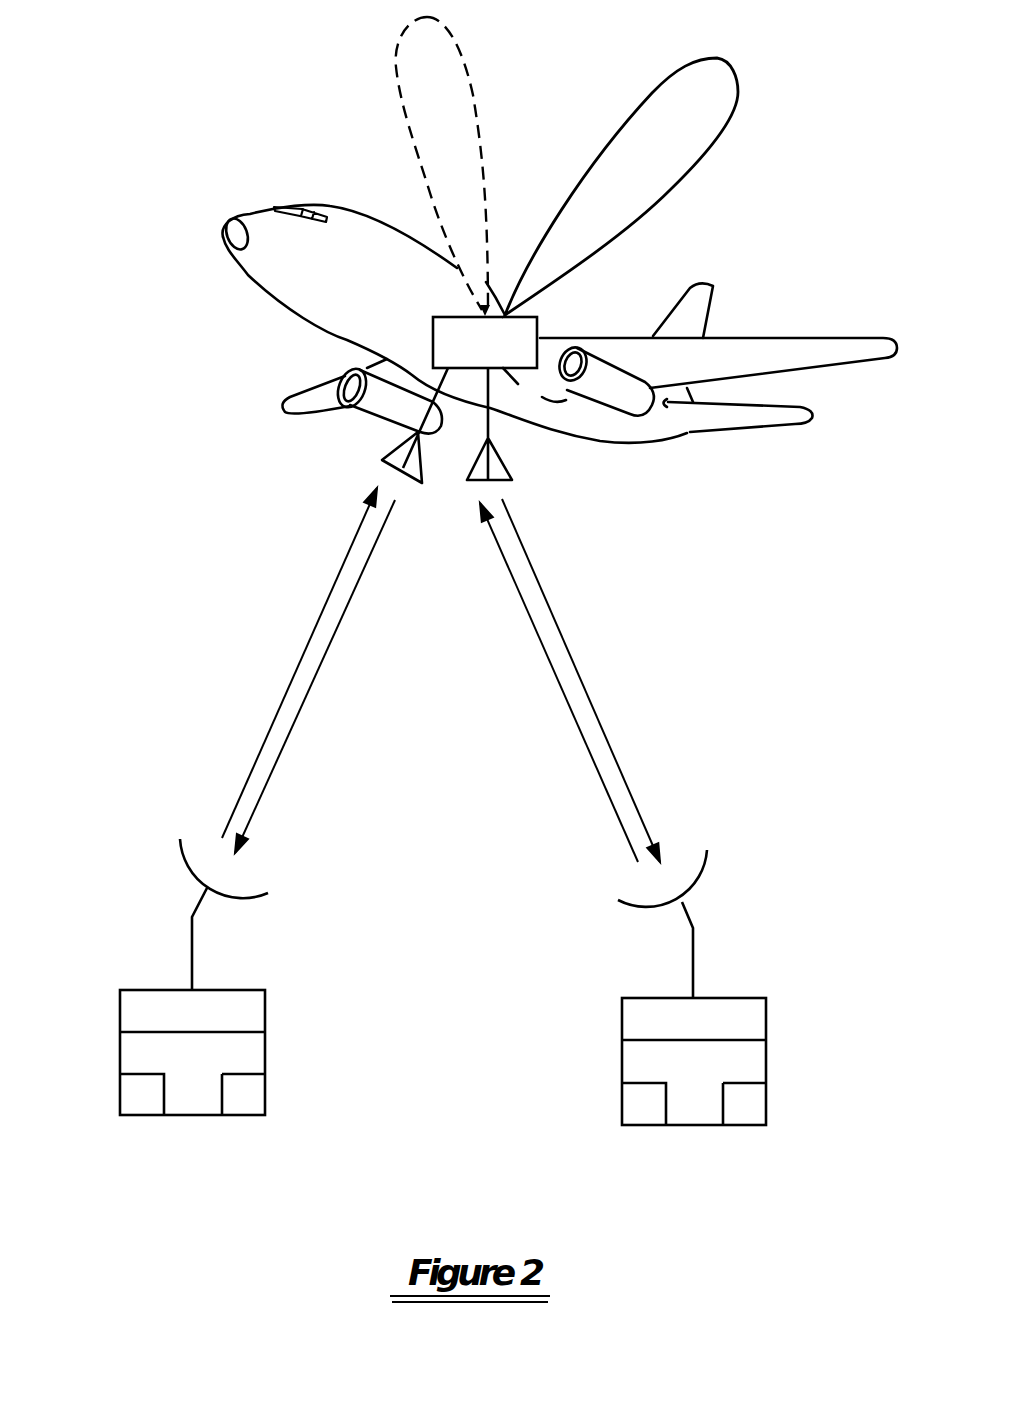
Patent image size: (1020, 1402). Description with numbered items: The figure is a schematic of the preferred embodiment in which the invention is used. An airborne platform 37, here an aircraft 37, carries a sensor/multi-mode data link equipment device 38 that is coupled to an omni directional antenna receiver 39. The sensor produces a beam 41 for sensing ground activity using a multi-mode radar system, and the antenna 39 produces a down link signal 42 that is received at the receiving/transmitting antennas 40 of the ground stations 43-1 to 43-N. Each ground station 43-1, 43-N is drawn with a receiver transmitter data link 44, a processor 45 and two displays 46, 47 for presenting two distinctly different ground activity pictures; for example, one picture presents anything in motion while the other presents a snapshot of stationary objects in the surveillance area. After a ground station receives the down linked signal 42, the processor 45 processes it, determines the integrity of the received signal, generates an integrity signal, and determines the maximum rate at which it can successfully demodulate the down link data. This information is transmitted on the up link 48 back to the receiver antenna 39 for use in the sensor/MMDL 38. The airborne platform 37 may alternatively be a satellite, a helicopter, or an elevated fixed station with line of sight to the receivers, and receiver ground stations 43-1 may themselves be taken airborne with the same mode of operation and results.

The airborne platform 37 is at (640, 430).
The sensor/multi-mode data link equipment device 38 is at (537, 336).
The omni directional antenna receiver 39 is at (547, 513).
The receiving/transmitting antenna 40 is at (698, 883).
The beam 41 is at (605, 162).
The down link signal 42 is at (560, 632).
The ground station 43-N is at (275, 1049).
The ground station 43-1 is at (775, 1062).
The receiver transmitter data link 44 is at (632, 1007).
The processor 45 is at (628, 1057).
The display 46 is at (637, 1117).
The display 47 is at (757, 1117).
The up link 48 is at (547, 655).